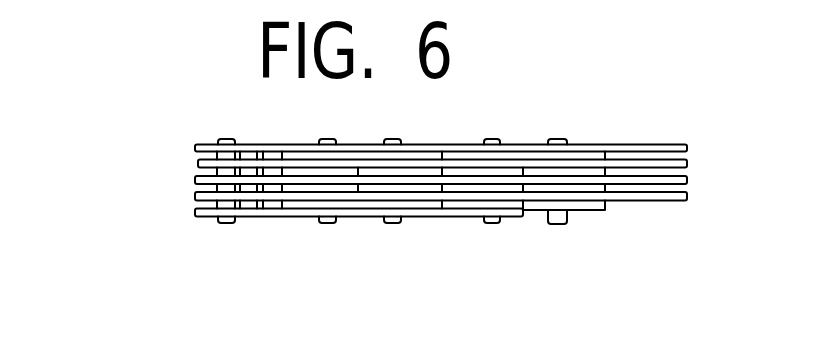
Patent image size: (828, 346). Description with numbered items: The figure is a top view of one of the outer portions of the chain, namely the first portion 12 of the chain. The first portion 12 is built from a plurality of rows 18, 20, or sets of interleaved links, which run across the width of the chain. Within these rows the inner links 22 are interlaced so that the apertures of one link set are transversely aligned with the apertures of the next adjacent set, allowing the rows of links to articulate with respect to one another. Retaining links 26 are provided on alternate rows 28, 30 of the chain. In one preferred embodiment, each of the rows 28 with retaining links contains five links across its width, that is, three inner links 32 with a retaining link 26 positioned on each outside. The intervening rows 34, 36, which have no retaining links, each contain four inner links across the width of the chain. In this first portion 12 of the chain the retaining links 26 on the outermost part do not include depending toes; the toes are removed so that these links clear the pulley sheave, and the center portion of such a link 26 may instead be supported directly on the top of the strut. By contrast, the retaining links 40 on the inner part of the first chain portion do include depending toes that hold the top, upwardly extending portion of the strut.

The first portion of the chain 12 is at (183, 184).
The row of interleaved links 18 is at (297, 137).
The row of interleaved links 20 is at (368, 138).
The inner link 22 is at (655, 202).
The retaining link 26 is at (208, 217).
The row with retaining links 28 is at (280, 223).
The row with retaining links 30 is at (442, 223).
The inner link 32 is at (197, 164).
The row without retaining links 34 is at (362, 223).
The row without retaining links 36 is at (520, 224).
The retaining link with toes 40 is at (621, 143).